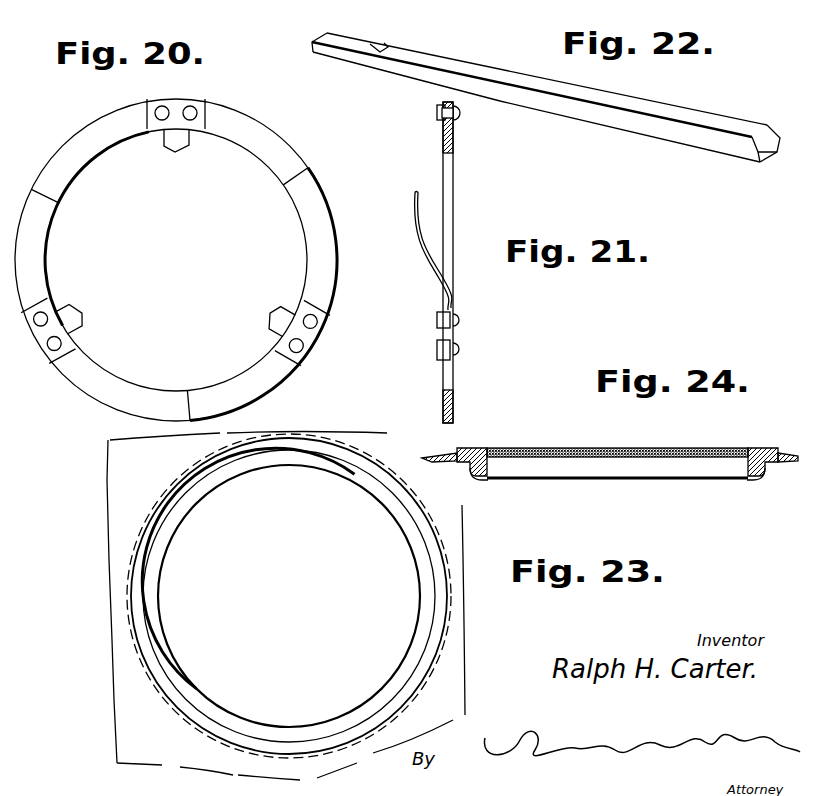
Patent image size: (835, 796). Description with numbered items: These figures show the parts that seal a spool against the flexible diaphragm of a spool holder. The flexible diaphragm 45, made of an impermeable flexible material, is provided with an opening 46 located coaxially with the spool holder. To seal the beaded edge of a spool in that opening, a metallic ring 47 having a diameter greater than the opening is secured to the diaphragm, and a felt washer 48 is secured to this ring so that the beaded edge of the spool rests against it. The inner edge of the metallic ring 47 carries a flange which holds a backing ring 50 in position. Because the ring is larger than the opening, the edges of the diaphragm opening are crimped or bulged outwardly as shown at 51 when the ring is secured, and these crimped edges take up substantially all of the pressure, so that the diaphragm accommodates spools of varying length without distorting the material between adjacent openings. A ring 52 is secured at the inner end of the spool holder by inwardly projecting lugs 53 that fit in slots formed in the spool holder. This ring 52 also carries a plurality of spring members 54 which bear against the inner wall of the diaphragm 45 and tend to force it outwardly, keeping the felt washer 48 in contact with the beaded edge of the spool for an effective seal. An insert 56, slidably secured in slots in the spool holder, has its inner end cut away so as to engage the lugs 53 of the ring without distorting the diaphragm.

In FIG. 24, the flexible diaphragm 45 is at (428, 454).
In FIG. 23, the flexible diaphragm 45 is at (123, 504).
In FIG. 24, the opening 46 is at (477, 482).
In FIG. 24, the metallic ring 47 is at (612, 470).
In FIG. 23, the metallic ring 47 is at (277, 732).
In FIG. 24, the felt washer 48 is at (532, 451).
In FIG. 24, the backing ring 50 is at (747, 468).
In FIG. 24, the crimped edges 51 is at (453, 458).
In FIG. 20, the ring 52 is at (315, 232).
In FIG. 21, the ring 52 is at (449, 195).
In FIG. 20, the lug 53 is at (175, 140).
In FIG. 21, the lug 53 is at (454, 150).
In FIG. 20, the spring member 54 is at (282, 150).
In FIG. 21, the spring member 54 is at (443, 118).
In FIG. 22, the insert 56 is at (410, 53).